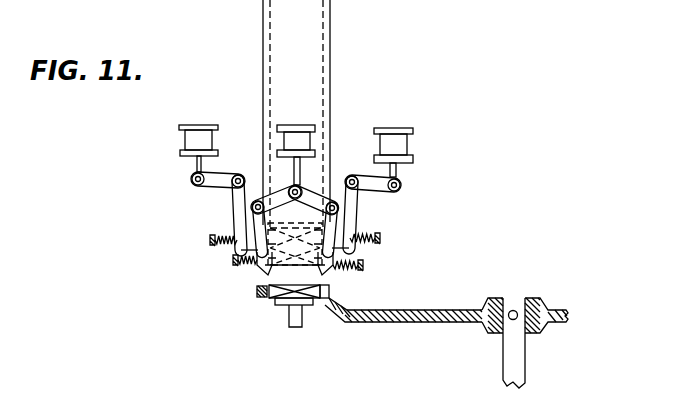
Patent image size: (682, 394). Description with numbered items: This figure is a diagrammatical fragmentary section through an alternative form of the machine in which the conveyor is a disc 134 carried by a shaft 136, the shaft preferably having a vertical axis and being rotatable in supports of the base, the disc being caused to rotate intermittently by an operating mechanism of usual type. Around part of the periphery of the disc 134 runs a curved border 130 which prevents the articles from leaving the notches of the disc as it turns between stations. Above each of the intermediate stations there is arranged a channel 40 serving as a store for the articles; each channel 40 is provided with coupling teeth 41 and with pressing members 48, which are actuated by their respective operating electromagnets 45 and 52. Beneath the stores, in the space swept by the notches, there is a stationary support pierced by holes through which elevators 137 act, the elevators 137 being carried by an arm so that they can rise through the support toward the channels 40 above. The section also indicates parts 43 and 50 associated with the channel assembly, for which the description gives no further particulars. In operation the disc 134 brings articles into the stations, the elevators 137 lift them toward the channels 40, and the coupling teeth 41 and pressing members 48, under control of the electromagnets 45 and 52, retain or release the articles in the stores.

The channel 40 is at (316, 31).
The operating electromagnet 45 is at (292, 137).
The operating electromagnet 52 is at (390, 145).
The pivot link 50 is at (352, 177).
The toggle links 43 is at (339, 206).
The coupling teeth 41 is at (330, 272).
The pressing members 48 is at (362, 250).
The curved border 130 is at (257, 290).
The elevators 137 is at (290, 318).
The disc 134 is at (427, 318).
The shaft 136 is at (515, 360).